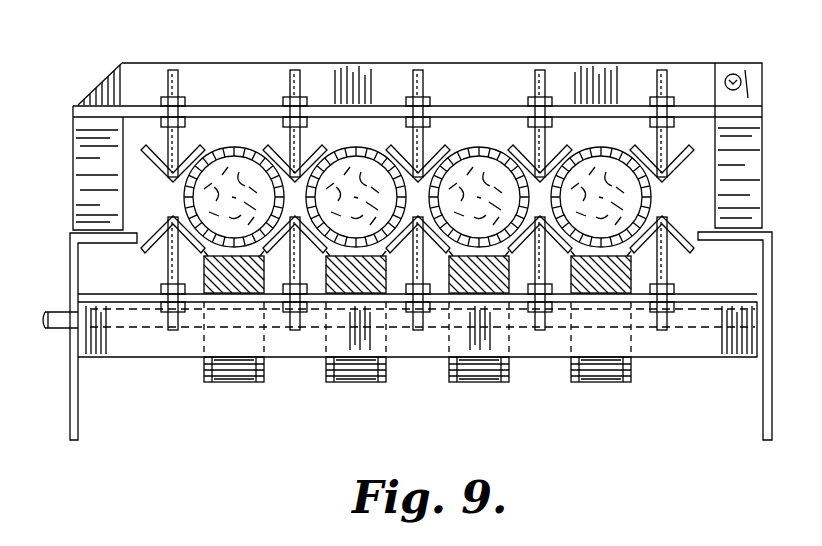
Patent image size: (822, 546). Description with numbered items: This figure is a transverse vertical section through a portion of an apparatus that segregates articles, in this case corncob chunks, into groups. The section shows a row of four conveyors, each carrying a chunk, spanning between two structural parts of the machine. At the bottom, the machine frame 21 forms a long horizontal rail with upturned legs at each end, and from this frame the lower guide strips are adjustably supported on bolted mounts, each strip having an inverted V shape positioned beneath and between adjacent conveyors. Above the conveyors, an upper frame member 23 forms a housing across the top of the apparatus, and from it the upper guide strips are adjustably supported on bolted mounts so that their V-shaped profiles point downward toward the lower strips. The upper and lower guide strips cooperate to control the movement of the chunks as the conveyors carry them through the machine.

The machine frame 21 is at (93, 300).
The upper frame member 23 is at (200, 82).